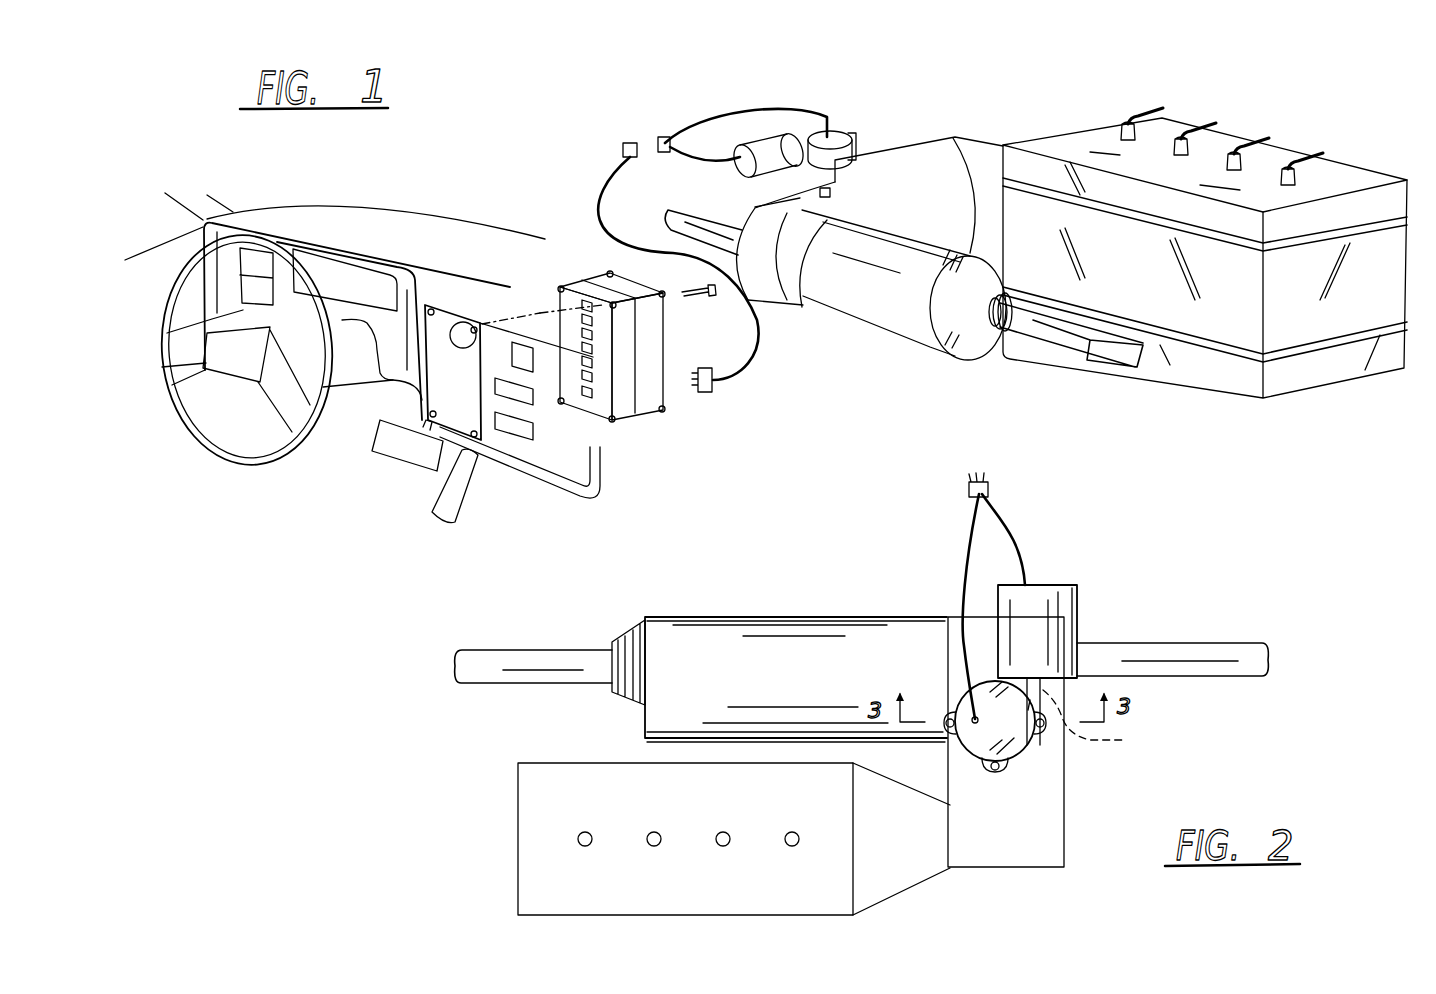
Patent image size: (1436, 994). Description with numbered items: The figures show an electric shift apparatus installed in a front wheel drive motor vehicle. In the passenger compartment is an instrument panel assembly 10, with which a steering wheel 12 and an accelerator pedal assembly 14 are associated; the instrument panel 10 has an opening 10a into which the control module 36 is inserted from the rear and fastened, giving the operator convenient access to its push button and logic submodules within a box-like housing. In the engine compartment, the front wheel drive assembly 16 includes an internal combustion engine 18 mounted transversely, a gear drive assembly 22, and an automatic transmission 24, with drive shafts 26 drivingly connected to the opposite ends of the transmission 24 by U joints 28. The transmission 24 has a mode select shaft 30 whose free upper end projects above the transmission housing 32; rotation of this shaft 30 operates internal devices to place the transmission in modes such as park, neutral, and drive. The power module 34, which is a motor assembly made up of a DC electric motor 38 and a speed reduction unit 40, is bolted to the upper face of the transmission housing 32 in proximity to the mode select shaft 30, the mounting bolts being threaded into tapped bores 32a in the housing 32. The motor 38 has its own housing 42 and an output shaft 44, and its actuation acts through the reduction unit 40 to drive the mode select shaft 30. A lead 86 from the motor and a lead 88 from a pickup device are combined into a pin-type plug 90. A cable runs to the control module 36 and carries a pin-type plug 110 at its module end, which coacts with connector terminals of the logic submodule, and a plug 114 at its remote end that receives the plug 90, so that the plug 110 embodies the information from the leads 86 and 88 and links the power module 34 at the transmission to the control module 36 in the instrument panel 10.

In FIG. 1, the instrument panel assembly 10 is at (456, 236).
In FIG. 1, the opening 10a is at (463, 328).
In FIG. 1, the steering wheel 12 is at (220, 456).
In FIG. 1, the accelerator pedal assembly 14 is at (426, 494).
In FIG. 1, the front wheel drive assembly 16 is at (1099, 116).
In FIG. 2, the internal combustion engine 18 is at (514, 849).
In FIG. 1, the gear drive assembly 22 is at (934, 146).
In FIG. 2, the gear drive assembly 22 is at (1017, 872).
In FIG. 1, the automatic transmission 24 is at (904, 311).
In FIG. 2, the automatic transmission 24 is at (844, 612).
In FIG. 1, the drive shafts 26 is at (704, 212).
In FIG. 2, the drive shafts 26 is at (505, 649).
In FIG. 1, the U joints 28 is at (988, 333).
In FIG. 2, the U joints 28 is at (631, 634).
In FIG. 1, the mode select shaft 30 is at (818, 193).
In FIG. 1, the transmission housing 32 is at (774, 254).
In FIG. 2, the transmission housing 32 is at (812, 685).
In FIG. 1, the tapped bores 32a is at (806, 213).
In FIG. 1, the power module 34 is at (853, 130).
In FIG. 2, the power module 34 is at (1021, 775).
In FIG. 1, the control module 36 is at (640, 426).
In FIG. 1, the DC electric motor 38 is at (769, 148).
In FIG. 2, the DC electric motor 38 is at (1078, 603).
In FIG. 1, the speed reduction unit 40 is at (813, 134).
In FIG. 2, the speed reduction unit 40 is at (1030, 752).
In FIG. 2, the motor housing 42 is at (1042, 648).
In FIG. 2, the output shaft 44 is at (1101, 718).
In FIG. 2, the lead 86 is at (1023, 550).
In FIG. 1, the lead 88 is at (773, 108).
In FIG. 2, the lead 88 is at (964, 573).
In FIG. 1, the pin-type plug 90 is at (665, 136).
In FIG. 2, the pin-type plug 90 is at (992, 485).
In FIG. 1, the pin-type plug 110 is at (713, 385).
In FIG. 1, the plug 114 is at (628, 143).